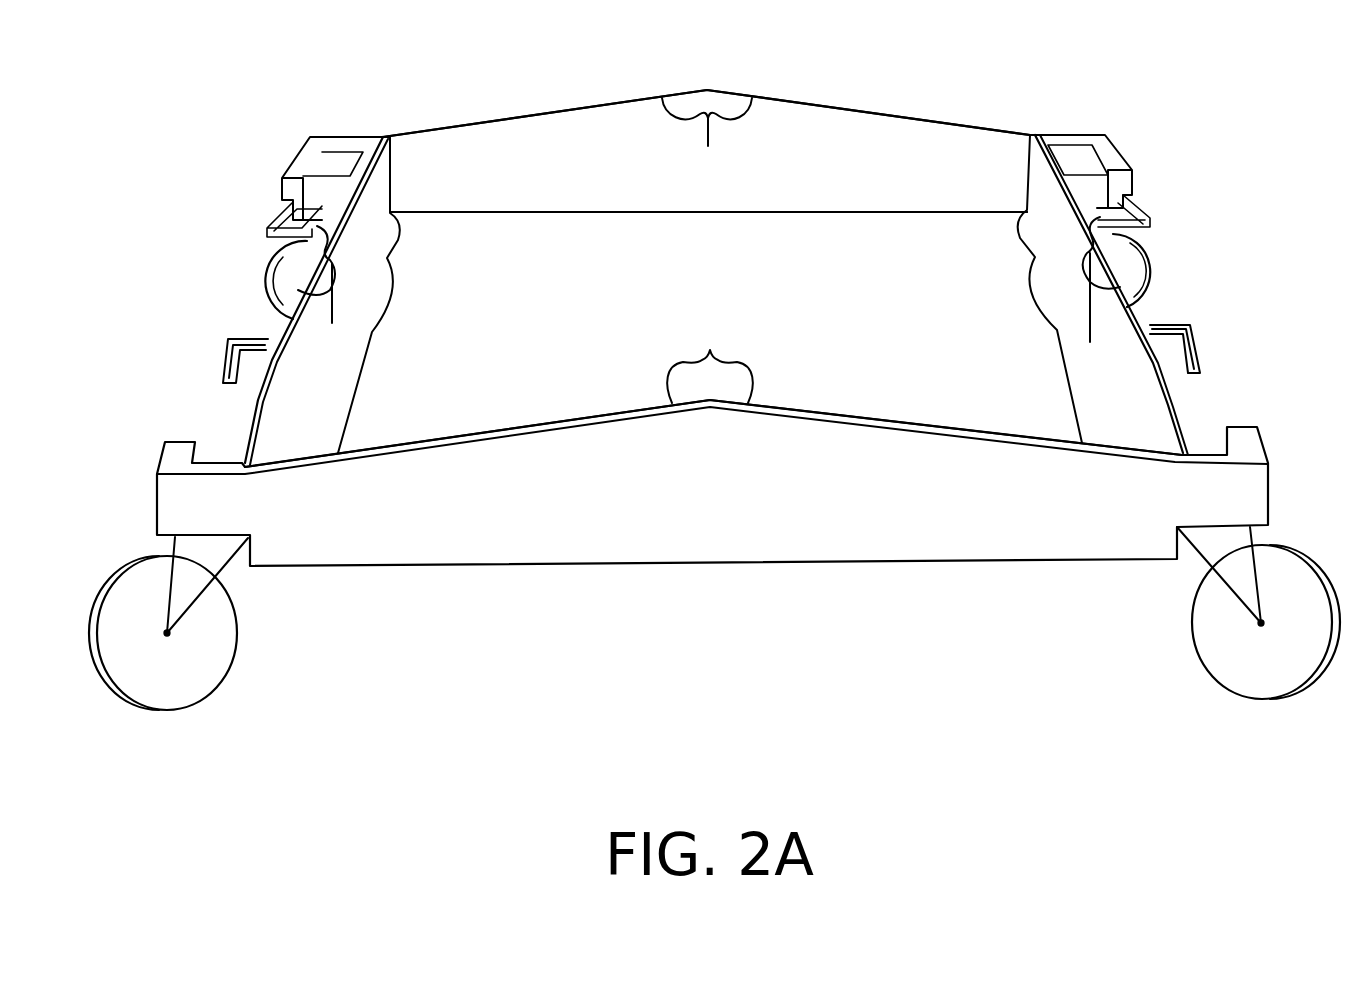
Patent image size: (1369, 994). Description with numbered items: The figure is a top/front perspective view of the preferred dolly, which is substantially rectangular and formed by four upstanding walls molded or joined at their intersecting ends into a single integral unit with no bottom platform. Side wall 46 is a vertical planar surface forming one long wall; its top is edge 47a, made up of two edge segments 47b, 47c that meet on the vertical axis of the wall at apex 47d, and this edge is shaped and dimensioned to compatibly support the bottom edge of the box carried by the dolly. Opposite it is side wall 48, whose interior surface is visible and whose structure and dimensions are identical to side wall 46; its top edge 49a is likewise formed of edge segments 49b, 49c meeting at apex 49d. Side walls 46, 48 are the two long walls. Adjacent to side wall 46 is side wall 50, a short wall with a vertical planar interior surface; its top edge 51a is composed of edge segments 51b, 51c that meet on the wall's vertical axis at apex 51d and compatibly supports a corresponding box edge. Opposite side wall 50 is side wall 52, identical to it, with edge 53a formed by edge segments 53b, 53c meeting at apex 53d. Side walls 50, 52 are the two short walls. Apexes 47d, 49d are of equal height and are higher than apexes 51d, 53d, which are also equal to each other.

The side wall 46 is at (455, 540).
The edge 47a is at (841, 347).
The edge segment 47b is at (541, 427).
The edge segment 47c is at (1017, 447).
The apex 47d is at (711, 406).
The side wall 48 is at (490, 178).
The edge 49a is at (651, 148).
The edge segment 49b is at (534, 116).
The edge segment 49c is at (906, 115).
The apex 49d is at (707, 90).
The side wall 50 is at (1190, 295).
The edge 51a is at (1092, 342).
The edge segment 51b is at (1082, 182).
The edge segment 51c is at (1226, 368).
The apex 51d is at (1133, 252).
The side wall 52 is at (310, 392).
The edge 53a is at (332, 320).
The edge segment 53b is at (332, 203).
The edge segment 53c is at (260, 358).
The apex 53d is at (290, 257).